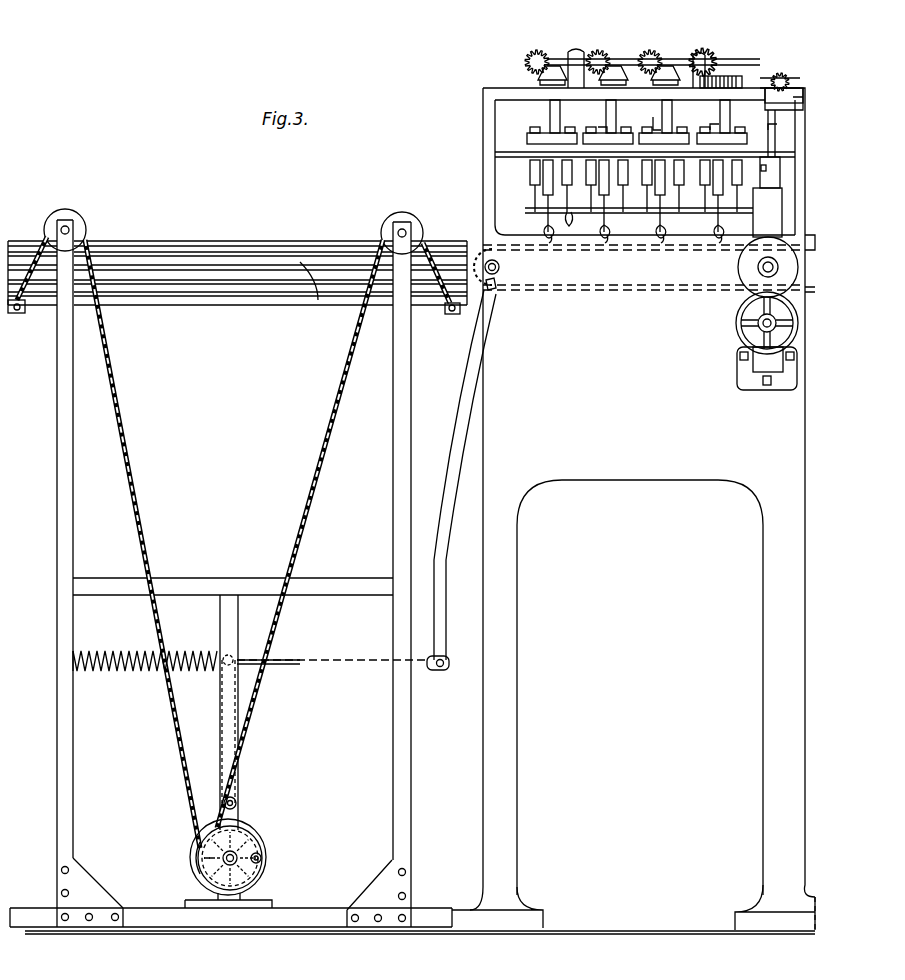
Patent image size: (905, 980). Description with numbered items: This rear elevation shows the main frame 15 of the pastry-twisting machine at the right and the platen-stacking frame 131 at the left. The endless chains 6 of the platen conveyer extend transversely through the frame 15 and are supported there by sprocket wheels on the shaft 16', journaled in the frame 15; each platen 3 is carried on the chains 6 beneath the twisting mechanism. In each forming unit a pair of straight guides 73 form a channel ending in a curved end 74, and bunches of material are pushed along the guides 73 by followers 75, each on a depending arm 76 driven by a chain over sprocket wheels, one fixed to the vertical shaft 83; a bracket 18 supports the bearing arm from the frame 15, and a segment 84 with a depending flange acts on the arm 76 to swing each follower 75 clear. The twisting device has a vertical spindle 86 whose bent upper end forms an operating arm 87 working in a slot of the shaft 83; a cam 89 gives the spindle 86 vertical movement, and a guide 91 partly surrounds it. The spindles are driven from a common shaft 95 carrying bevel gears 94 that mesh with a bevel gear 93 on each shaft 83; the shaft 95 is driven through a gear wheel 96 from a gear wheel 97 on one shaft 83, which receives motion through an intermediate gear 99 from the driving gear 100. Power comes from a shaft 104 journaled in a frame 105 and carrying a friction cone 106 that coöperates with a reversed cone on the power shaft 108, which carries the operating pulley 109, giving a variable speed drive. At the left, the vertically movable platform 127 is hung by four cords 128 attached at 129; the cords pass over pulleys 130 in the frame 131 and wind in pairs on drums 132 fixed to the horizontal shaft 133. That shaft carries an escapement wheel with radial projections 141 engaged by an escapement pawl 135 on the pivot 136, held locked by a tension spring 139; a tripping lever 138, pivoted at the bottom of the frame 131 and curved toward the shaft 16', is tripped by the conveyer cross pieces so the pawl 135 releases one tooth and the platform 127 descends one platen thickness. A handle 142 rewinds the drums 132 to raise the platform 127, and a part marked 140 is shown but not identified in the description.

The platen 3 is at (318, 300).
The endless chains 6 is at (478, 250).
The frame 15 is at (812, 132).
The shaft 16' is at (522, 278).
The bracket 18 is at (501, 153).
The guides 73 is at (583, 218).
The curved end 74 is at (530, 210).
The follower 75 is at (533, 190).
The depending arm 76 is at (537, 173).
The vertical shaft 83 is at (548, 113).
The segment 84 is at (668, 165).
The spindle 86 is at (550, 200).
The operating arm 87 is at (548, 129).
The cam 89 is at (553, 135).
The guide 91 is at (548, 230).
The bevel gear 93 is at (538, 76).
The bevel gears 94 is at (538, 58).
The shaft 95 is at (630, 62).
The gear wheel 96 is at (712, 55).
The gear wheel 97 is at (738, 80).
The intermediate gear 99 is at (765, 75).
The driving gear 100 is at (795, 70).
The shaft 104 is at (757, 264).
The frame 105 is at (771, 176).
The friction cone 106 is at (745, 277).
The power shaft 108 is at (758, 323).
The operating pulley 109 is at (740, 336).
The vertically movable platform 127 is at (247, 300).
The cords 128 is at (45, 232).
The cord attachment 129 is at (17, 313).
The pulleys 130 is at (83, 217).
The frame 131 is at (393, 552).
The drums 132 is at (268, 884).
The horizontal shaft 133 is at (222, 864).
The escapement pawl 135 is at (243, 823).
The pivot 136 is at (235, 799).
The tripping lever 138 is at (453, 395).
The tension spring 139 is at (125, 673).
The arm 140 is at (198, 868).
The radial projections 141 is at (214, 870).
The handle 142 is at (260, 856).